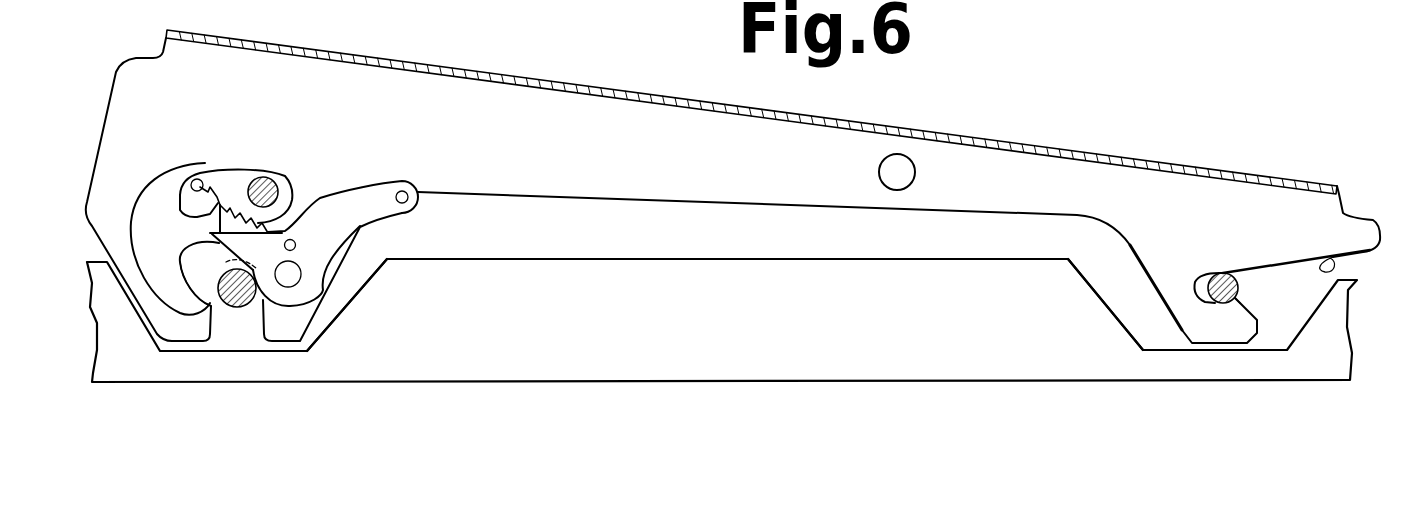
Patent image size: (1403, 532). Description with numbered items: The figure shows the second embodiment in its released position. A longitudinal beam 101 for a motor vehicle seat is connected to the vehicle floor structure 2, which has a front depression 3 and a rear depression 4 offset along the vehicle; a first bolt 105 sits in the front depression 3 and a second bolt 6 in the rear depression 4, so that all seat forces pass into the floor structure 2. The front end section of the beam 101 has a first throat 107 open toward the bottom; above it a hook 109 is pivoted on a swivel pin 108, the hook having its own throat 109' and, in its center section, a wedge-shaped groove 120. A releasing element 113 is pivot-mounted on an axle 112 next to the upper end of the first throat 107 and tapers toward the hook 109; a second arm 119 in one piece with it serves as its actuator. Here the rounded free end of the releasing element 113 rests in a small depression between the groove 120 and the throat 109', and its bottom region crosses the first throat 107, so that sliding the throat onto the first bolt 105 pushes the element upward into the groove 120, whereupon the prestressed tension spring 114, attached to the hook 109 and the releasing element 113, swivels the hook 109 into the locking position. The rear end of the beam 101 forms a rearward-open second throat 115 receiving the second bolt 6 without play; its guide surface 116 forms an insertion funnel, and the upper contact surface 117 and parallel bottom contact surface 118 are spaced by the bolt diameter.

The longitudinal beam 101 is at (975, 134).
The floor structure 2 is at (936, 339).
The front depression 3 is at (328, 313).
The rear depression 4 is at (1130, 300).
The first throat 107 is at (240, 320).
The second arm 119 is at (363, 200).
The axle 112 is at (292, 274).
The first bolt 105 is at (220, 308).
The releasing element 113 is at (189, 265).
The throat of the hook 109' is at (156, 352).
The hook 109 is at (164, 217).
The groove 120 is at (180, 173).
The tension spring 114 is at (262, 177).
The swivel pin 108 is at (286, 184).
The second throat 115 is at (1198, 282).
The upper contact surface 117 is at (1203, 272).
The bottom contact surface 118 is at (1210, 303).
The second bolt 6 is at (1238, 297).
The guide surface 116 is at (1333, 257).